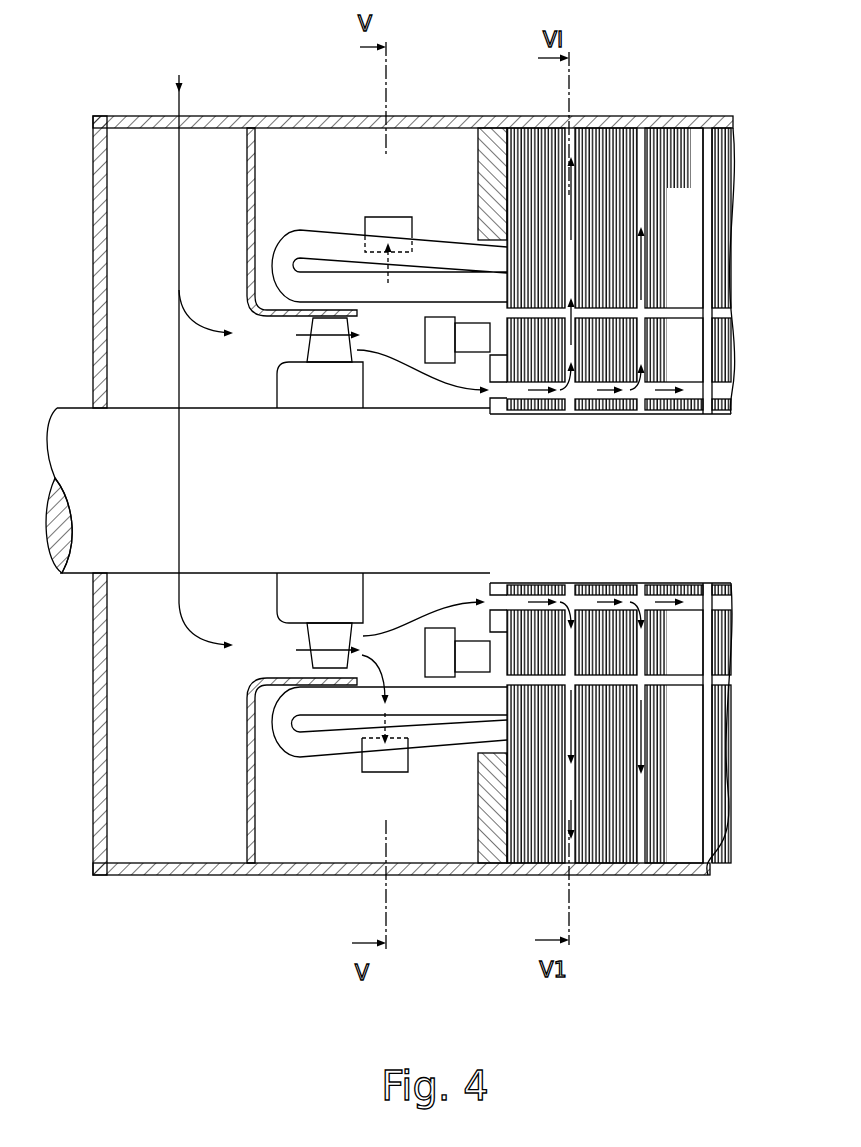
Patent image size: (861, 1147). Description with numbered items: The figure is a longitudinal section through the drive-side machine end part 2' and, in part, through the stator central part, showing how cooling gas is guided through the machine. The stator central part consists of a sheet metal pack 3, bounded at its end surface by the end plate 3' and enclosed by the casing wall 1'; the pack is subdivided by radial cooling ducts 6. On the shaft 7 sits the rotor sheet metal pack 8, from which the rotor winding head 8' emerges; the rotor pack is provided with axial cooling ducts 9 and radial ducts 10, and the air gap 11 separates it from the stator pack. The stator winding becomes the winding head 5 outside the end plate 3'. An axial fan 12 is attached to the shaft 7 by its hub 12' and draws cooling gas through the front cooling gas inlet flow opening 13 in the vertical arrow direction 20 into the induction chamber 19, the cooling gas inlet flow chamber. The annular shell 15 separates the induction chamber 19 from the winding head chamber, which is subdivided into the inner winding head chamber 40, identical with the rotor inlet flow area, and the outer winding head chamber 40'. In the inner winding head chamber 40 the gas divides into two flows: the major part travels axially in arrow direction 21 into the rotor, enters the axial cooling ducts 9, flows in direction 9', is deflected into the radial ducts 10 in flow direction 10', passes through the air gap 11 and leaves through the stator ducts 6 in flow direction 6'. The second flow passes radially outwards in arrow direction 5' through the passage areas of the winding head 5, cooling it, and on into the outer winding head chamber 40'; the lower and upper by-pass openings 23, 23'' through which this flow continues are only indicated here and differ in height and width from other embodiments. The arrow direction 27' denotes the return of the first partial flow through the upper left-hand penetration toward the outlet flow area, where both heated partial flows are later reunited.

The casing wall 1' is at (688, 451).
The housing 2' is at (414, 459).
The sheet metal pack 3 is at (576, 451).
The end plate 3' is at (506, 474).
The winding head 5 is at (389, 469).
The arrow direction of second cooling gas flow 5' is at (406, 513).
The radial cooling ducts 6 is at (664, 439).
The flow direction through stator ducts 6' is at (705, 451).
The shaft 7 is at (73, 425).
The rotor sheet metal pack 8 is at (610, 486).
The rotor winding head 8' is at (471, 497).
The axial cooling ducts 9 is at (619, 417).
The arrow direction in axial cooling ducts 9' is at (619, 492).
The radial ducts 10 is at (674, 498).
The flow direction in radial ducts 10' is at (662, 381).
The air gap 11 is at (527, 315).
The axial fan 12 is at (285, 493).
The hub 12' is at (288, 492).
The front cooling gas inlet flow opening 13 is at (137, 120).
The annular shell 15 is at (246, 175).
The induction chamber 19 is at (135, 247).
The arrow direction of induced cooling gas 20 is at (179, 75).
The arrow direction of first cooling gas flow 21 is at (432, 386).
The lower by-pass opening 23 is at (366, 781).
The upper by-pass opening 23'' is at (381, 215).
The arrow direction through upper left-hand penetration 27' is at (493, 139).
The inner winding head chamber 40 is at (414, 497).
The outer winding head chamber 40' is at (367, 132).